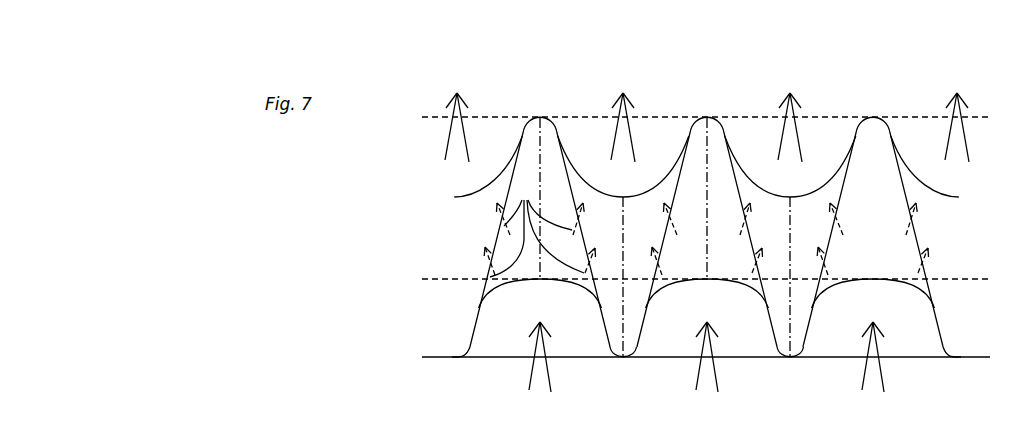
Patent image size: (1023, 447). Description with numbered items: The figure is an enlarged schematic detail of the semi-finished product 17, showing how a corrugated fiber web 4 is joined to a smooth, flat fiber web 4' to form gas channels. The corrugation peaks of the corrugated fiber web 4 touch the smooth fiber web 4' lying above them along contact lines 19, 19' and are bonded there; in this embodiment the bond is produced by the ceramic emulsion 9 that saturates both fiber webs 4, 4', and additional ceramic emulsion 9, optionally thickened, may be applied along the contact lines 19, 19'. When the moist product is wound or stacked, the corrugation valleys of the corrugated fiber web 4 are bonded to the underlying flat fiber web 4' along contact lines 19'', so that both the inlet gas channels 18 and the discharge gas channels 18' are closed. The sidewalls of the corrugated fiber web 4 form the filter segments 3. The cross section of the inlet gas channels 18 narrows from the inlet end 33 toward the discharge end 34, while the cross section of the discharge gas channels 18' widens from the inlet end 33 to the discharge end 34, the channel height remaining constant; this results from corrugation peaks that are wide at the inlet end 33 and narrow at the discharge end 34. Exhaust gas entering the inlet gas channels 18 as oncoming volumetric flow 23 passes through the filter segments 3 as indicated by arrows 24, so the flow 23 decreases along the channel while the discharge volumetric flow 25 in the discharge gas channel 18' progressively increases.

The discharge end 34 is at (408, 83).
The inlet end 33 is at (408, 403).
The semi-finished product 17 is at (380, 252).
The smooth fiber web 4' is at (706, 227).
The corrugated fiber web 4 is at (465, 233).
The contact line 19 is at (531, 217).
The contact line 19' is at (707, 212).
The contact line 19'' is at (641, 299).
The ceramic emulsion 9 is at (834, 125).
The inlet gas channel 18 is at (895, 348).
The discharge gas channel 18' is at (790, 127).
The arrows indicating gas passage through filter segments 24 is at (537, 227).
The discharge volumetric flow 25 is at (466, 133).
The oncoming volumetric flow 23 is at (551, 368).
The filter segment 3 is at (768, 357).